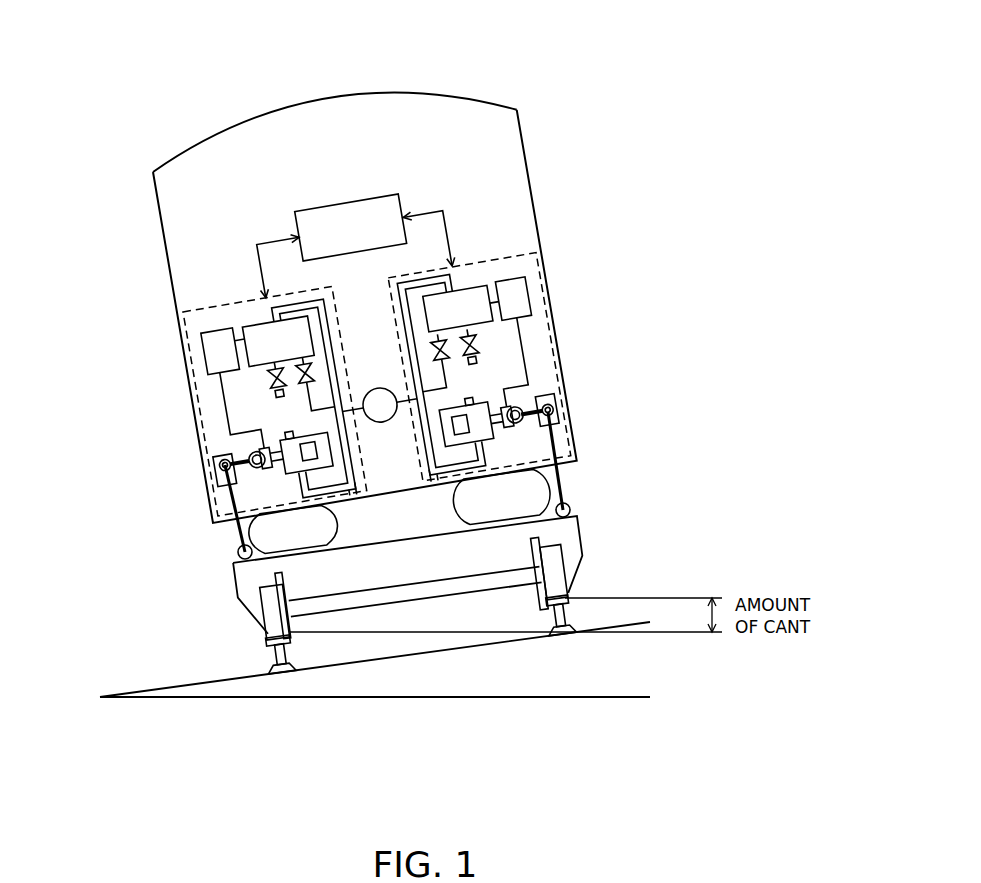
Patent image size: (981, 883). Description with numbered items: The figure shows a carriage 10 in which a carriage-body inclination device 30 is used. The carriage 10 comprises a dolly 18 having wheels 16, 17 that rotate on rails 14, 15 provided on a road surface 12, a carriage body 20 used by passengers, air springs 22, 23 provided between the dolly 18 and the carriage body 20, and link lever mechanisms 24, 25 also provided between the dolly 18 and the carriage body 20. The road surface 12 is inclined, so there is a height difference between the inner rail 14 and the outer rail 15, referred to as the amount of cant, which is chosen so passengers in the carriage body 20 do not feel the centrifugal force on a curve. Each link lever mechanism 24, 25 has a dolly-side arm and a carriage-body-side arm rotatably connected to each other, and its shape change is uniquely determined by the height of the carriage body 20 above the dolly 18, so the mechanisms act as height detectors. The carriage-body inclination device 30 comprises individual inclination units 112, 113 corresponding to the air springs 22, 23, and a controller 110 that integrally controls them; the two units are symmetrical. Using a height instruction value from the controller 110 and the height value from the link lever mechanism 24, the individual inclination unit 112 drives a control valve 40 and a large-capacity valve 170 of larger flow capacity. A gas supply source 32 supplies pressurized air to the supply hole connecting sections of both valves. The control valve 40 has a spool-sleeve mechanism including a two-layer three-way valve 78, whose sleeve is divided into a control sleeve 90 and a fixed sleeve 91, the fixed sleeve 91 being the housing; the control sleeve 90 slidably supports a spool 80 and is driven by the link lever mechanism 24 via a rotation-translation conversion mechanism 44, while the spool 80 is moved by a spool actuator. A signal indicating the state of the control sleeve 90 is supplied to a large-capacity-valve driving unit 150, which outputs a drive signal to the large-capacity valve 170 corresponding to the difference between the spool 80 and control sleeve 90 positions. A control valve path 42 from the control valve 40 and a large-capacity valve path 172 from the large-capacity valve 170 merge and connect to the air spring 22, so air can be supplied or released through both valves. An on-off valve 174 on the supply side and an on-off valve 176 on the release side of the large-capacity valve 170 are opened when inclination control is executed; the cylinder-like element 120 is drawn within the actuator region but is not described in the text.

The carriage 10 is at (350, 346).
The road surface 12 is at (138, 690).
The rail 14 is at (262, 643).
The rail 15 is at (565, 603).
The wheel 16 is at (268, 618).
The wheel 17 is at (560, 566).
The dolly 18 is at (240, 586).
The carriage body 20 is at (518, 119).
The air spring 22 is at (332, 525).
The air spring 23 is at (476, 507).
The link lever mechanism 24 is at (240, 545).
The link lever mechanism 25 is at (560, 478).
The carriage-body inclination device 30 is at (335, 337).
The gas supply source 32 is at (380, 388).
The control valve 40 is at (196, 455).
The control valve path 42 is at (357, 480).
The rotation-translation conversion mechanism 44 is at (217, 428).
The two-layer three-way valve 78 is at (187, 491).
The spool 80 is at (310, 475).
The control sleeve 90 is at (302, 462).
The fixed sleeve 91 is at (316, 483).
The controller 110 is at (352, 200).
The individual inclination unit 112 is at (186, 312).
The individual inclination unit 113 is at (520, 253).
The actuator cylinder 120 is at (255, 452).
The large-capacity-valve driving unit 150 is at (204, 343).
The large-capacity valve 170 is at (250, 327).
The large-capacity valve path 172 is at (327, 311).
The on-off valve 174 is at (298, 381).
The on-off valve 176 is at (265, 386).